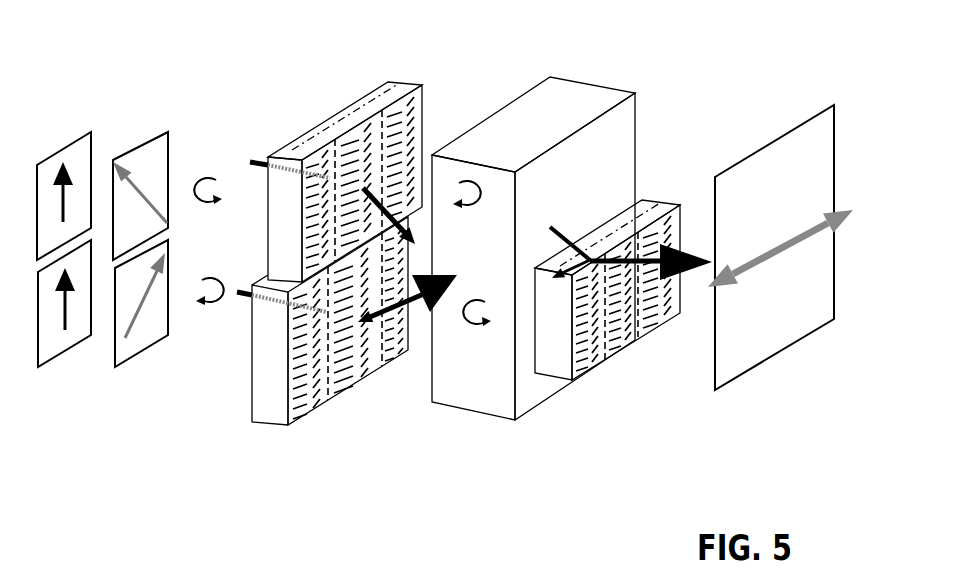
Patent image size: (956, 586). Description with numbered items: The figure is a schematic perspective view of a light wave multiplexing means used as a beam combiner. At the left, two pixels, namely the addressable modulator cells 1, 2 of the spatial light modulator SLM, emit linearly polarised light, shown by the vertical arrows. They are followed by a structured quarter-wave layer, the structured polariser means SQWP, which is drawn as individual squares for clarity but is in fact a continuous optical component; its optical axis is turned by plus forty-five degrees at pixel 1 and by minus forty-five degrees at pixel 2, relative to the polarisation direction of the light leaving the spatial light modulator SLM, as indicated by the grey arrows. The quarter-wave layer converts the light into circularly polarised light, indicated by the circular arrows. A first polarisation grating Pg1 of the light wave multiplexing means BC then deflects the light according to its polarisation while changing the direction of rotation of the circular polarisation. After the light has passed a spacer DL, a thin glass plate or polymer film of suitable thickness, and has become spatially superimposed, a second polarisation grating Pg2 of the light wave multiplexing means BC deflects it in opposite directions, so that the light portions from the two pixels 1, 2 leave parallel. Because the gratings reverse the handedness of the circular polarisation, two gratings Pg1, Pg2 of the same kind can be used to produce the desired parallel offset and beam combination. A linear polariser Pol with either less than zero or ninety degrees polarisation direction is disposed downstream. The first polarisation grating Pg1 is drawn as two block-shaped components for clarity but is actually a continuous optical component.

The addressable modulator cell 1 is at (64, 189).
The addressable modulator cell 2 is at (64, 314).
The spatial light modulator SLM is at (64, 293).
The structured polariser means SQWP is at (133, 421).
The light wave multiplexing means BC is at (728, 83).
The first polarisation grating Pg1 is at (270, 427).
The spacer DL is at (533, 267).
The second polarisation grating Pg2 is at (640, 342).
The linear polariser Pol is at (780, 247).